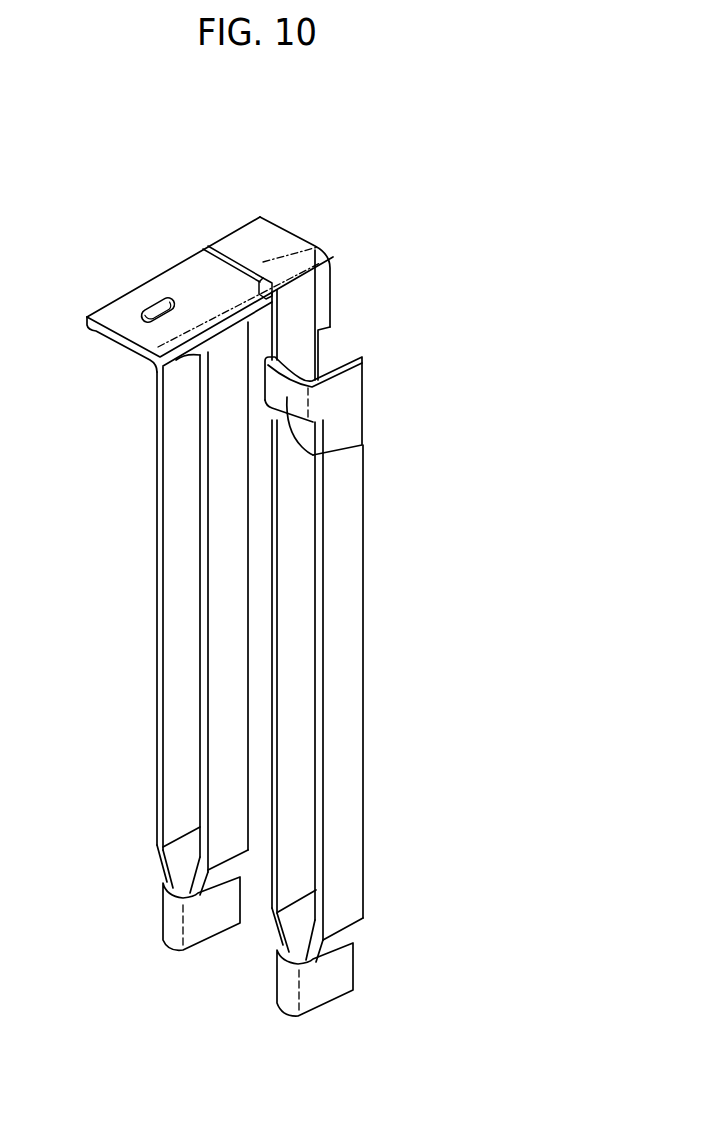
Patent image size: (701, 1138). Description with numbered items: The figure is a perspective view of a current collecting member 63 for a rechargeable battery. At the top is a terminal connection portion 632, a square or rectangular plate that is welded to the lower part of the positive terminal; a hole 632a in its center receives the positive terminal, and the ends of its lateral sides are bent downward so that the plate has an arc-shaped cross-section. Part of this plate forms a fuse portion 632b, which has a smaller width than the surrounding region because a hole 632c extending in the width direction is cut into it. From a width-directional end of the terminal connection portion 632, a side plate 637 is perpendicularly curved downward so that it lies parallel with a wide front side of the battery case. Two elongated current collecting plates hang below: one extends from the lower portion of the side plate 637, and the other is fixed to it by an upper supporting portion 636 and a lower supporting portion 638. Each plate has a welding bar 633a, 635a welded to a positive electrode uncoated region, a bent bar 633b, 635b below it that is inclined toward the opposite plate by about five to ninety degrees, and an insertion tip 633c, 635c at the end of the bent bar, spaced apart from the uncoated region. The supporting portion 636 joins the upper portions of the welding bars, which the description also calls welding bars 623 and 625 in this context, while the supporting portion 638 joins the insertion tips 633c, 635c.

The current collecting member 63 is at (296, 222).
The terminal connection portion 632 is at (187, 273).
The hole 632a is at (148, 308).
The fuse portion 632b is at (331, 276).
The hole 632c is at (227, 257).
The side plate 637 is at (317, 307).
The supporting portion 636 is at (362, 445).
The left leg 623 is at (180, 485).
The right leg 625 is at (225, 548).
The welding bar 633a is at (157, 706).
The bent bar 633b is at (183, 855).
The insertion tip 633c is at (163, 905).
The welding bar 635a is at (225, 760).
The bent bar 635b is at (218, 875).
The insertion tip 635c is at (212, 920).
The supporting portion 638 is at (288, 998).